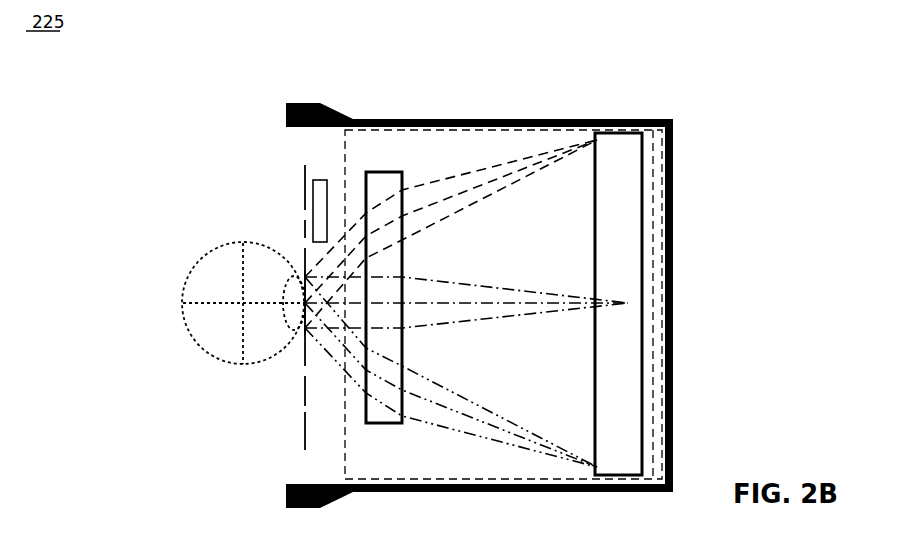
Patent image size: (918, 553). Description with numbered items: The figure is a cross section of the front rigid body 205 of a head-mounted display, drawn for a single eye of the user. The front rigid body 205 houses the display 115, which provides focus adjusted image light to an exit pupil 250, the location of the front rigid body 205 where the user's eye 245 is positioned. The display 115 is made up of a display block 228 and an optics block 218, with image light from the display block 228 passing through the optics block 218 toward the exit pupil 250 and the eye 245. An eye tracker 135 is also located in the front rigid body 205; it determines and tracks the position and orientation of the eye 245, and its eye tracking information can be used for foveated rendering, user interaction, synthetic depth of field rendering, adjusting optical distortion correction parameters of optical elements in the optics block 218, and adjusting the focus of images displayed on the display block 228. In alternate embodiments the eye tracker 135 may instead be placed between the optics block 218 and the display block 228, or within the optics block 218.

The front rigid body 205 is at (647, 116).
The display block 228 is at (641, 162).
The optics block 218 is at (361, 186).
The eye tracker 135 is at (311, 208).
The display 115 is at (343, 398).
The exit pupil 250 is at (302, 423).
The eye 245 is at (192, 268).